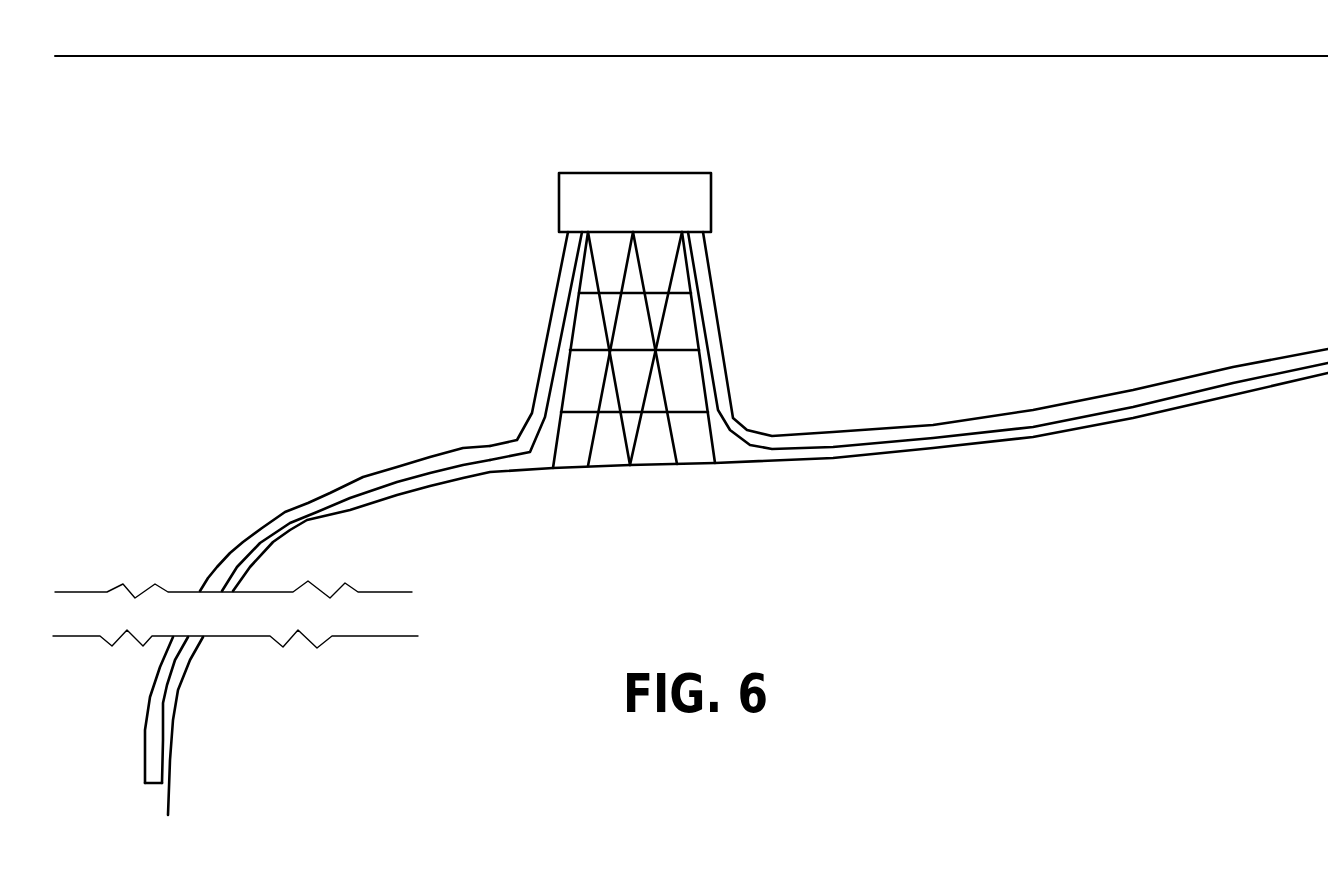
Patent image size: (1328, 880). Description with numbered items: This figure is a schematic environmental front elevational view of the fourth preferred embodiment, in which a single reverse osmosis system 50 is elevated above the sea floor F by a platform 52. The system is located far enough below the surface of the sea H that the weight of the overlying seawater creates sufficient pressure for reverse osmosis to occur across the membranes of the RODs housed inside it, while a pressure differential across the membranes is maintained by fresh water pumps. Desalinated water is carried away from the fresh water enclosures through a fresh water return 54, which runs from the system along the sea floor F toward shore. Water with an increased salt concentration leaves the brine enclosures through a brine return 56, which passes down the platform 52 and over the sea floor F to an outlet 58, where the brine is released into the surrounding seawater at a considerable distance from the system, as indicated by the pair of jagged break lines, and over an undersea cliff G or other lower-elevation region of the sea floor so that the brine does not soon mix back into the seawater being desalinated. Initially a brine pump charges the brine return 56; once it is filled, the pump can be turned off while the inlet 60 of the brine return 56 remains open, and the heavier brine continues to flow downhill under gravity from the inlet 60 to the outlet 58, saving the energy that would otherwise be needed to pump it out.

The platform deck 50 is at (561, 174).
The platform 52 is at (695, 319).
The fresh water return 54 is at (849, 433).
The brine return 56 is at (423, 456).
The outlet 58 is at (145, 784).
The inlet 60 is at (565, 237).
The sea floor F is at (1047, 440).
The undersea cliff G is at (173, 735).
The surface of the sea H is at (653, 55).